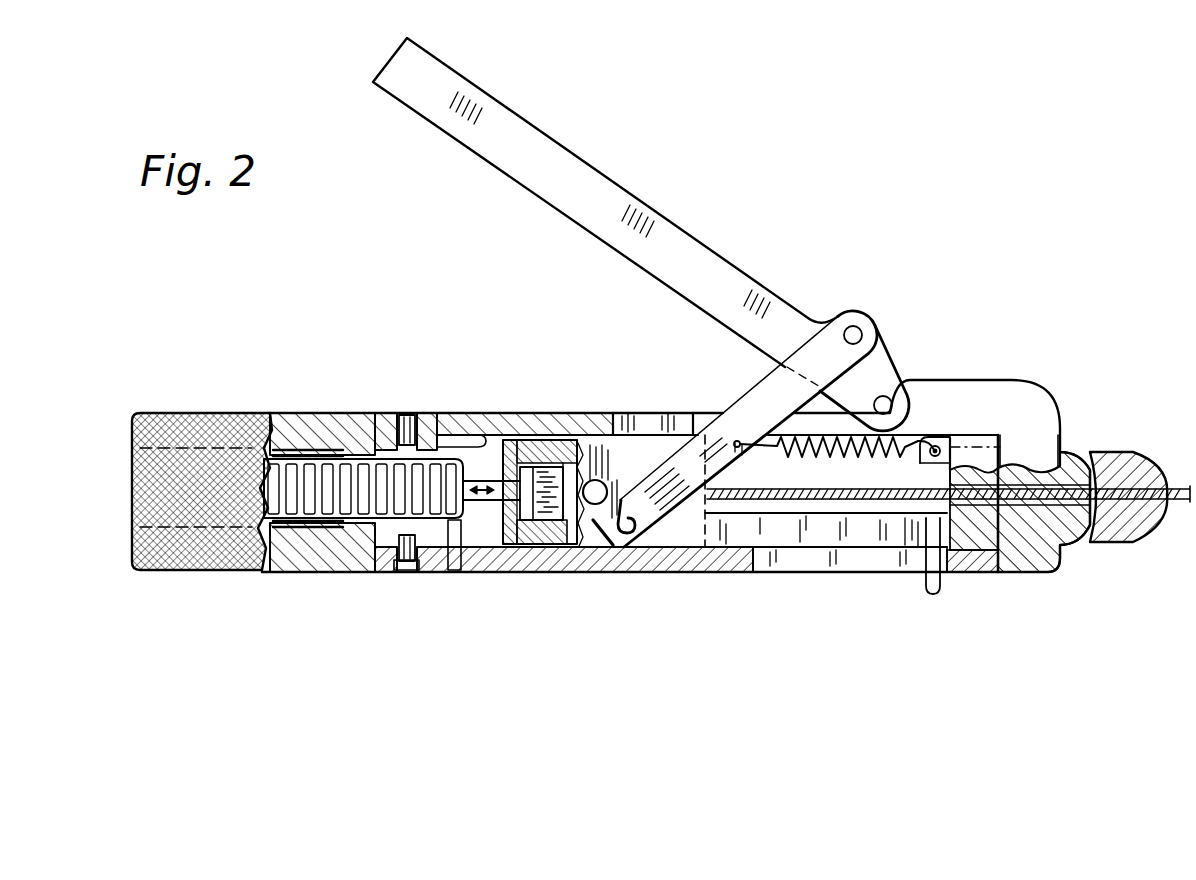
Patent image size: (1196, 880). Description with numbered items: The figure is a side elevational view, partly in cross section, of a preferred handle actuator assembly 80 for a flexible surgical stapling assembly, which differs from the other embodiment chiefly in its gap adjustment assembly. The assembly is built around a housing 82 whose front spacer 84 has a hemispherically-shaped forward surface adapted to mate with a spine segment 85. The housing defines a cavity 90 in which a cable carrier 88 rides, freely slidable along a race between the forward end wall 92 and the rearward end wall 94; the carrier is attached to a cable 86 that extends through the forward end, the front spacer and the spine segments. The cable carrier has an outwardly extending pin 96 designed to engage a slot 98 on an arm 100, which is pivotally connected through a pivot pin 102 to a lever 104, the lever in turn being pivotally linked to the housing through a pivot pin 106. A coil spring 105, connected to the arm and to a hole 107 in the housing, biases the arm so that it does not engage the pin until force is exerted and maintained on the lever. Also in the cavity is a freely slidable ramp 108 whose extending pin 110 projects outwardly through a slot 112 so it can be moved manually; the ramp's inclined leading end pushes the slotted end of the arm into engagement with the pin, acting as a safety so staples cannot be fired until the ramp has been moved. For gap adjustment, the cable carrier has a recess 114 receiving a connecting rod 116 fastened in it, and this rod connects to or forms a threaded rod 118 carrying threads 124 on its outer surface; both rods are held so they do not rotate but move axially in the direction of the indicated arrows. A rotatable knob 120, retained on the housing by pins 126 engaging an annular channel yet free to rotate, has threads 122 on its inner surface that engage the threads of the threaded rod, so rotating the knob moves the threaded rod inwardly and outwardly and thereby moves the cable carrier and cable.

The handle actuator assembly 80 is at (958, 381).
The housing 82 is at (453, 410).
The front spacer 84 is at (1040, 567).
The spine segment 85 is at (1122, 452).
The cable 86 is at (903, 497).
The cable carrier 88 is at (548, 540).
The cavity 90 is at (478, 522).
The forward end wall 92 is at (942, 469).
The rearward end wall 94 is at (472, 440).
The pin 96 is at (606, 480).
The slot 98 is at (617, 547).
The arm 100 is at (728, 468).
The pivot pin 102 is at (858, 327).
The lever 104 is at (678, 237).
The coil spring 105 is at (900, 440).
The pivot pin 106 is at (886, 396).
The hole 107 is at (957, 442).
The ramp 108 is at (692, 530).
The extending pin 110 is at (942, 590).
The slot 112 is at (812, 560).
The recess 114 is at (545, 440).
The connecting rod 116 is at (494, 530).
The threaded rod 118 is at (293, 455).
The rotatable knob 120 is at (247, 570).
The threads 122 is at (373, 515).
The threads 124 is at (277, 525).
The pins 126 is at (405, 413).